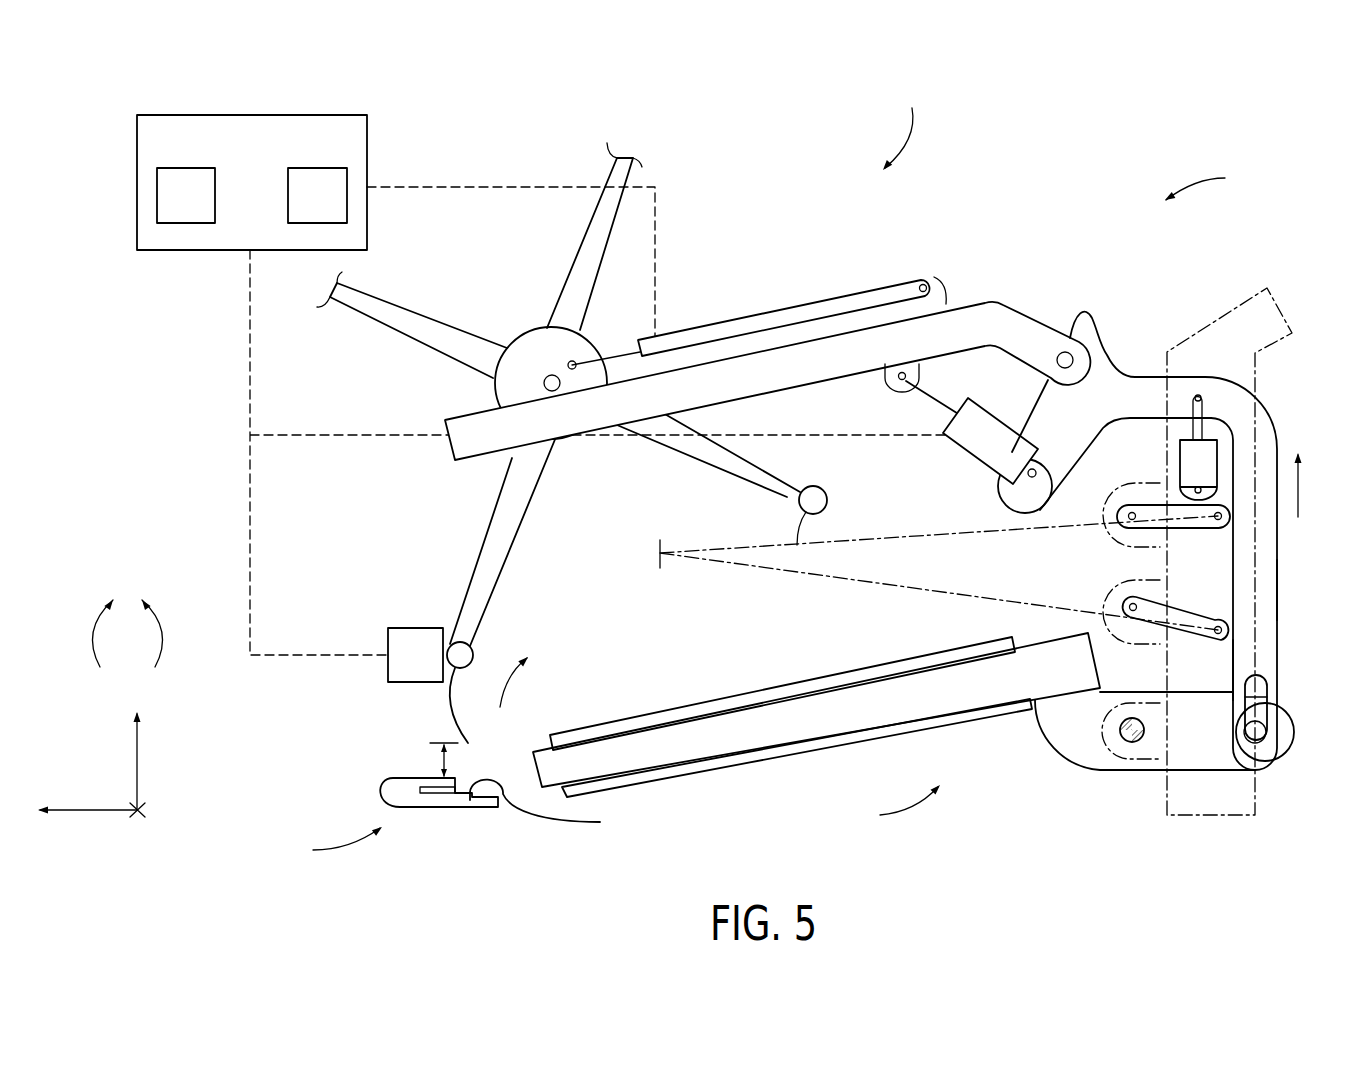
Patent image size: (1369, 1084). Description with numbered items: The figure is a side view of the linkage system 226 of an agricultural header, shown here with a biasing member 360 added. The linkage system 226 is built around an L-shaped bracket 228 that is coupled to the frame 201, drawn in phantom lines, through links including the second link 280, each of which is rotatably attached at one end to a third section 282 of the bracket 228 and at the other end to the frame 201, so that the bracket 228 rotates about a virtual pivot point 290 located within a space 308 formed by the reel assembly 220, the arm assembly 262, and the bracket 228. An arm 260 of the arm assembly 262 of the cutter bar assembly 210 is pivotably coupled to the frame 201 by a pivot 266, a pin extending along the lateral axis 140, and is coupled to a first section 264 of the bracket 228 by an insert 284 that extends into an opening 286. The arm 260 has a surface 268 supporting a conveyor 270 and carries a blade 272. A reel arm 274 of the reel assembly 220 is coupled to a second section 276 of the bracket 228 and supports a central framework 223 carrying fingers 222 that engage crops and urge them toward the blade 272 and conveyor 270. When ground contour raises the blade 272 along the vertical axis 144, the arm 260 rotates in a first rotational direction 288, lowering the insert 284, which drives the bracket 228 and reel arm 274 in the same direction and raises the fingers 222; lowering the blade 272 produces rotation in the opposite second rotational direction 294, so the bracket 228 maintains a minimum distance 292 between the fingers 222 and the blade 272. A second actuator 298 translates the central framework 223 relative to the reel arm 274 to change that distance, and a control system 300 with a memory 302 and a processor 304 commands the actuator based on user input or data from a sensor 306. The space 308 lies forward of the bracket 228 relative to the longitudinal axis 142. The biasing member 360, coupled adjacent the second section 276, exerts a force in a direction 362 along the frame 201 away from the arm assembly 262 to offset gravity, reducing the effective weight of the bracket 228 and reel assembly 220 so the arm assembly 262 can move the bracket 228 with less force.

The lateral axis 140 is at (138, 815).
The longitudinal axis 142 is at (92, 812).
The vertical axis 144 is at (138, 768).
The frame 201 is at (1228, 800).
The cutter bar assembly 210 is at (383, 823).
The reel assembly 220 is at (905, 122).
The fingers 222 is at (593, 242).
The central framework 223 is at (530, 350).
The linkage system 226 is at (1220, 181).
The bracket 228 is at (1265, 437).
The arm 260 is at (1060, 723).
The arm assembly 262 is at (885, 808).
The first section 264 is at (1267, 667).
The pivot 266 is at (1125, 740).
The surface 268 is at (557, 763).
The conveyor 270 is at (662, 718).
The blade 272 is at (437, 800).
The reel arm 274 is at (1000, 300).
The second section 276 is at (1108, 395).
The second link 280 is at (1195, 608).
The third section 282 is at (1277, 588).
The insert 284 is at (1262, 735).
The opening 286 is at (1267, 693).
The first rotational direction 288 is at (82, 637).
The pivot point 290 is at (655, 557).
The distance 292 is at (440, 755).
The second rotational direction 294 is at (168, 637).
The second actuator 298 is at (800, 313).
The control system 300 is at (250, 115).
The memory 302 is at (157, 209).
The processor 304 is at (347, 209).
The sensor 306 is at (415, 628).
The space 308 is at (525, 739).
The biasing member 360 is at (1217, 422).
The direction 362 is at (1298, 490).